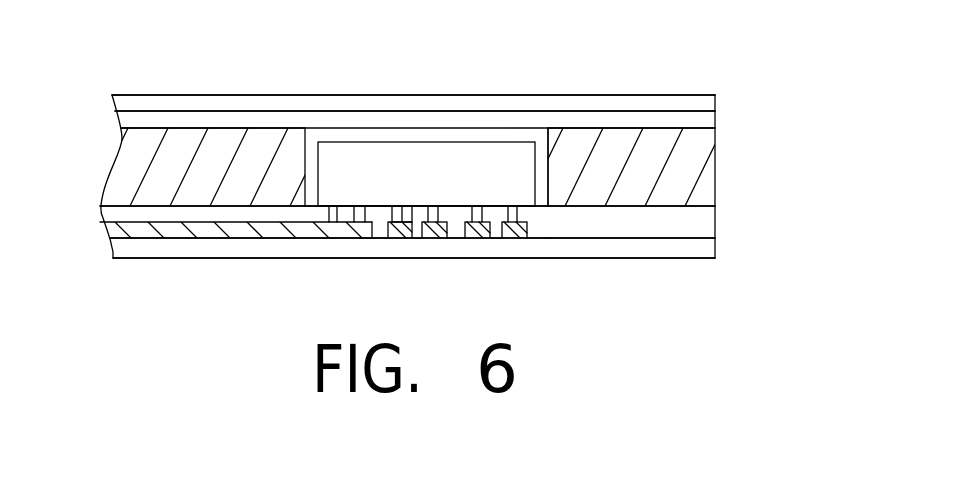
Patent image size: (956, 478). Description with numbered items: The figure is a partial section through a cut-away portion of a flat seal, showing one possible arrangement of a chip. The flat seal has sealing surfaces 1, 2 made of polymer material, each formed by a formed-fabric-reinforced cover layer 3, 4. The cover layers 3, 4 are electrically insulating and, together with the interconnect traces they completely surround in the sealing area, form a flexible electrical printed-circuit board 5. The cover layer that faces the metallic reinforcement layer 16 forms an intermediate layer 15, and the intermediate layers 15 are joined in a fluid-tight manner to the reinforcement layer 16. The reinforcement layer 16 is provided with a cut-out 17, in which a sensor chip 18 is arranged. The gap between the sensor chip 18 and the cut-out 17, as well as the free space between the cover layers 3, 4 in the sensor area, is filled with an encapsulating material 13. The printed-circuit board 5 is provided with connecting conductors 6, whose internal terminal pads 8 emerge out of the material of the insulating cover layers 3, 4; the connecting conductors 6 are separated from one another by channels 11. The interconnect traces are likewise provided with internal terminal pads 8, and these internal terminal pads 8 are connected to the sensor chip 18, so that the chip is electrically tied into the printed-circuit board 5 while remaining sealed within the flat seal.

The sealing surface 1 is at (568, 94).
The sealing surface 2 is at (638, 258).
The cover layer 3 is at (706, 103).
The cover layer 4 is at (683, 243).
The printed-circuit board 5 is at (658, 75).
The connecting conductor 6 is at (222, 230).
The internal terminal pad 8 is at (302, 228).
The channel 11 is at (498, 216).
The encapsulating material 13 is at (398, 133).
The intermediate layer 15 is at (703, 120).
The reinforcement layer 16 is at (694, 184).
The cut-out 17 is at (540, 157).
The sensor chip 18 is at (340, 158).